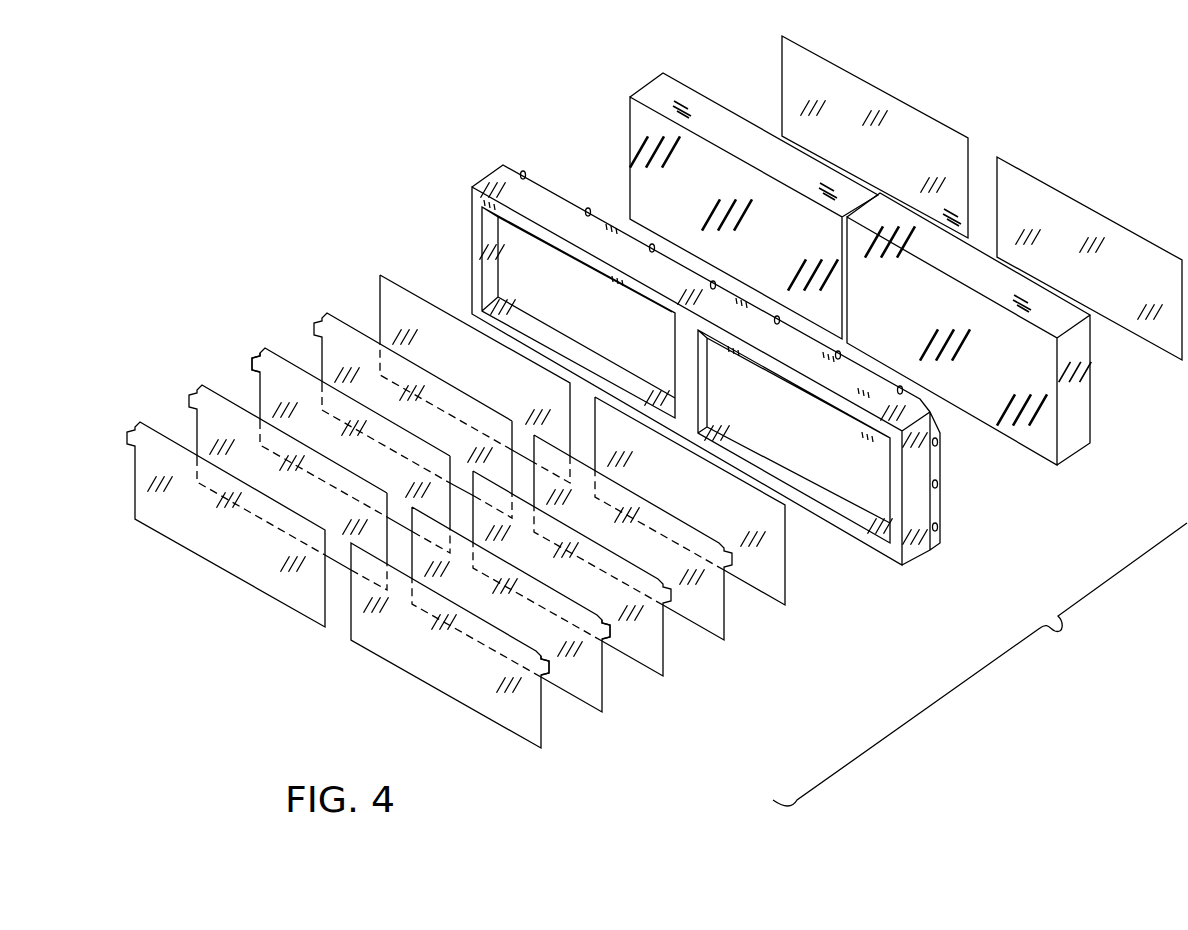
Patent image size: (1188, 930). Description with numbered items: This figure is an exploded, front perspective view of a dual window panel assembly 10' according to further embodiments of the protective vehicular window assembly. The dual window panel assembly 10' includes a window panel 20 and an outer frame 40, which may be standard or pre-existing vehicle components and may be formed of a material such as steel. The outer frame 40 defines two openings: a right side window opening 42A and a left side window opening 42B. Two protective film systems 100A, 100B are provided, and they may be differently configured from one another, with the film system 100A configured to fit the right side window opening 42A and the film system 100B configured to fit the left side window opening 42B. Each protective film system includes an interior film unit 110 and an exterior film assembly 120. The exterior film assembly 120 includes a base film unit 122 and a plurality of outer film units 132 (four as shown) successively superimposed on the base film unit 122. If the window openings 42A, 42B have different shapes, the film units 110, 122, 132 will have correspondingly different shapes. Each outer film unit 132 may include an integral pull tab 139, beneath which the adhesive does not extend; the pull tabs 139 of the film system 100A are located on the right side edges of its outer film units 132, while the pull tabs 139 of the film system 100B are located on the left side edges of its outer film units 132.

The dual window panel assembly 10' is at (906, 250).
The window panel 20 is at (781, 252).
The interior film unit 110 is at (915, 165).
The outer frame 40 is at (512, 165).
The right side window opening 42A is at (700, 378).
The left side window opening 42B is at (485, 247).
The protective film system 100A is at (882, 643).
The protective film system 100B is at (248, 128).
The exterior film assembly 120 is at (208, 212).
The base film unit 122 is at (380, 277).
The outer film unit 132 is at (267, 347).
The integral pull tab 139 is at (253, 362).